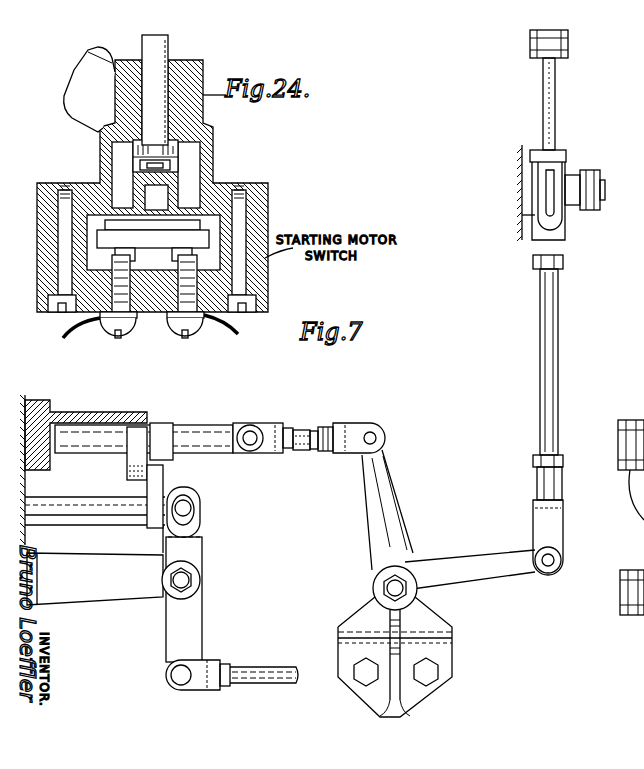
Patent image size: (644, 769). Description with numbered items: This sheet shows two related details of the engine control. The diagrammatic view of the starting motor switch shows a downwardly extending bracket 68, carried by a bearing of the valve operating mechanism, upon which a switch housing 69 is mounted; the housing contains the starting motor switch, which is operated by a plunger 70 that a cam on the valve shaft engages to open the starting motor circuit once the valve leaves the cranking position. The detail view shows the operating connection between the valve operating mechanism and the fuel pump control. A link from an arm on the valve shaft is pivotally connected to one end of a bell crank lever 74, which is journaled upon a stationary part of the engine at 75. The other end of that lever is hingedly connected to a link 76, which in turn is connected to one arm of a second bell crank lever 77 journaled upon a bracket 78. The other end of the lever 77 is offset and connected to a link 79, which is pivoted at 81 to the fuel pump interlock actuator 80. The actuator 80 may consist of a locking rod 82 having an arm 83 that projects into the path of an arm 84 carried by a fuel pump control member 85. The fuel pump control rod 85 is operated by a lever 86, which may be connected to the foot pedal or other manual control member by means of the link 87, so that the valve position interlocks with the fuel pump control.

In FIG. 24, the bracket 68 is at (83, 116).
In FIG. 24, the switch housing 69 is at (270, 228).
In FIG. 24, the plunger 70 is at (166, 58).
In FIG. 7, the bell crank lever 74 is at (556, 120).
In FIG. 7, the journal on stationary part of the engine 75 is at (603, 192).
In FIG. 7, the link 76 is at (547, 342).
In FIG. 7, the bell crank lever 77 is at (476, 570).
In FIG. 7, the bracket 78 is at (432, 620).
In FIG. 7, the link 79 is at (348, 432).
In FIG. 7, the fuel pump interlock actuator 80 is at (246, 425).
In FIG. 7, the pivot 81 is at (257, 428).
In FIG. 7, the locking rod 82 is at (160, 437).
In FIG. 7, the arm 83 is at (133, 470).
In FIG. 7, the arm 84 is at (160, 480).
In FIG. 7, the fuel pump control member 85 is at (113, 517).
In FIG. 7, the lever 86 is at (188, 622).
In FIG. 7, the link 87 is at (267, 670).